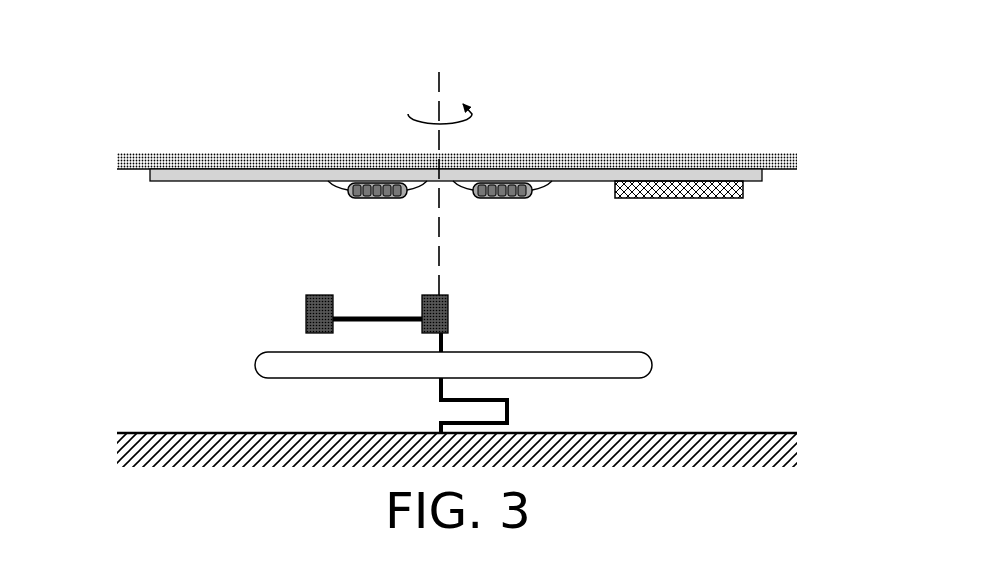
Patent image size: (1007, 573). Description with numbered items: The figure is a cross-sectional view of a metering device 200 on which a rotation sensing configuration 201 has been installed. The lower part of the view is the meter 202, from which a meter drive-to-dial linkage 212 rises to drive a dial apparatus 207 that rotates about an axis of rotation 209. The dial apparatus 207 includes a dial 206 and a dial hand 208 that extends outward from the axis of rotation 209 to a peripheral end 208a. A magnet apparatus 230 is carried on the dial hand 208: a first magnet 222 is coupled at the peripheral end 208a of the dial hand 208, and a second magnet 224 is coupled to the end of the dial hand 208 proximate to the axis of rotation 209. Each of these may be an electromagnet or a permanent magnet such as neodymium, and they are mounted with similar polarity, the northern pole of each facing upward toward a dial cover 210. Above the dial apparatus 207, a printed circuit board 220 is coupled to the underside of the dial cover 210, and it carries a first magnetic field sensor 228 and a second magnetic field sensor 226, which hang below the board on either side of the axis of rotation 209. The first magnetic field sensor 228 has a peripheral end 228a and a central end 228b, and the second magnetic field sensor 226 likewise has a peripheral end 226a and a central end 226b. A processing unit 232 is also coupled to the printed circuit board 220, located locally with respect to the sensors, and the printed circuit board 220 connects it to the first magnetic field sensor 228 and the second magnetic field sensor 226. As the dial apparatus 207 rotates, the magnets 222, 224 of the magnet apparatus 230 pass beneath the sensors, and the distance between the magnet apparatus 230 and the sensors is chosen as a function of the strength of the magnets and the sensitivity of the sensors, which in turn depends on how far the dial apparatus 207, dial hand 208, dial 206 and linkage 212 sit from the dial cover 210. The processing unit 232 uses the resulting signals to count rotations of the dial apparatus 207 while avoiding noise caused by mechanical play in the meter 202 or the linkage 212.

The metering device 200 is at (670, 110).
The rotation sensing configuration 201 is at (112, 352).
The meter 202 is at (242, 453).
The dial 206 is at (643, 352).
The dial apparatus 207 is at (815, 292).
The dial hand 208 is at (393, 316).
The peripheral end of dial hand 208a is at (337, 315).
The axis of rotation 209 is at (440, 167).
The dial cover 210 is at (730, 156).
The meter drive-to-dial linkage 212 is at (509, 400).
The printed circuit board 220 is at (149, 181).
The first magnet 222 is at (306, 308).
The second magnet 224 is at (448, 312).
The second magnetic field sensor 226 is at (343, 197).
The peripheral end of second magnetic field sensor 226a is at (346, 181).
The central end of second magnetic field sensor 226b is at (408, 181).
The first magnetic field sensor 228 is at (541, 201).
The peripheral end of first magnetic field sensor 228a is at (536, 181).
The central end of first magnetic field sensor 228b is at (470, 181).
The magnet apparatus 230 is at (408, 333).
The processing unit 232 is at (736, 200).